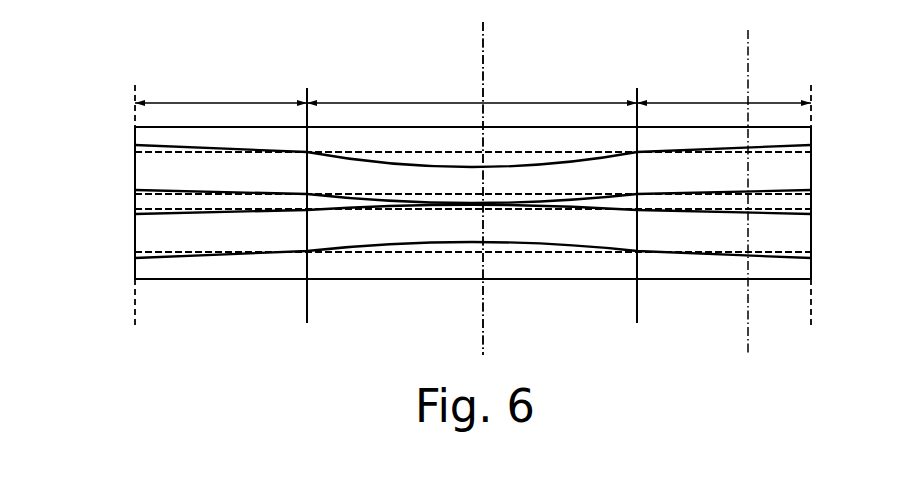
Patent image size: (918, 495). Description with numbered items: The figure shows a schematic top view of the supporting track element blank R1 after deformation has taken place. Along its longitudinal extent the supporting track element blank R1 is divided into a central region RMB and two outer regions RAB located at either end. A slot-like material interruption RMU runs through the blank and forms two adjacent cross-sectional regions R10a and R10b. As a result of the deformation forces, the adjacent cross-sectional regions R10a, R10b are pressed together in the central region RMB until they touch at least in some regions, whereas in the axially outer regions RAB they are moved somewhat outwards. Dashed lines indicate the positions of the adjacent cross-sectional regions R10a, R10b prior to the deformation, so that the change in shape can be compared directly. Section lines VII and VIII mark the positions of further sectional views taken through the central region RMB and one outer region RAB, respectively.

The supporting track element blank R1 is at (582, 122).
The cross-sectional region R10a is at (147, 163).
The cross-sectional region R10b is at (152, 237).
The outer region RAB is at (473, 87).
The slot-like material interruption RMU is at (466, 207).
The central region RMB is at (523, 188).
The section line VII is at (488, 41).
The section line VIII is at (753, 45).